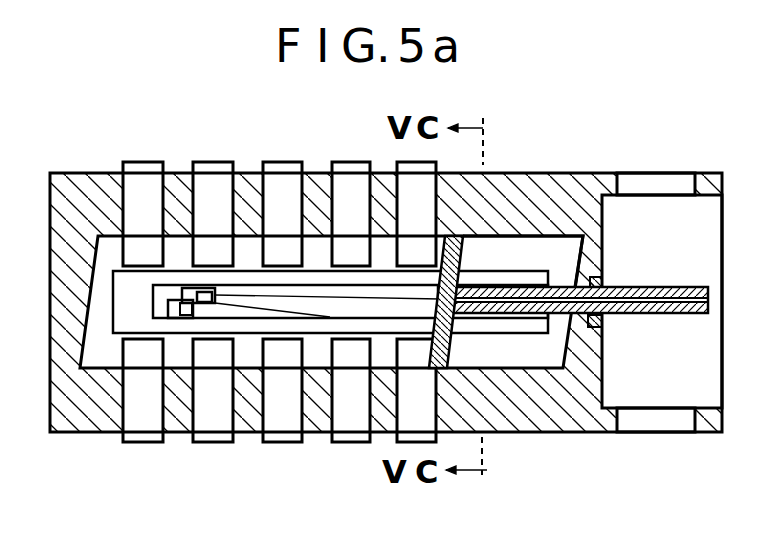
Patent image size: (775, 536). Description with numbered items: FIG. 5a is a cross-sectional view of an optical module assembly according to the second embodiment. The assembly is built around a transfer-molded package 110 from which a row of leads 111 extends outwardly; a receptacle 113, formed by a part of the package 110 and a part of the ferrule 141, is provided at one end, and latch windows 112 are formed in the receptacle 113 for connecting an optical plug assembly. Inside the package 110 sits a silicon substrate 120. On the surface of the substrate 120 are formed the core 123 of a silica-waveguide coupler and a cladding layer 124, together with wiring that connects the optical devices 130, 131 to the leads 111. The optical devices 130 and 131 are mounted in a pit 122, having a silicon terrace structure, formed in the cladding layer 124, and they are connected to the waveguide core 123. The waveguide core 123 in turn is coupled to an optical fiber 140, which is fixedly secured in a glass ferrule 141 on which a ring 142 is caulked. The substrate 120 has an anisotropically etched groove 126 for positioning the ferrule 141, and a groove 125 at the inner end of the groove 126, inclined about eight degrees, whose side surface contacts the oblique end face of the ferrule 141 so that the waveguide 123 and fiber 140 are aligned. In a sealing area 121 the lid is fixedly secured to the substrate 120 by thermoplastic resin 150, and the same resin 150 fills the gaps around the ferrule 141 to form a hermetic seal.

The package 110 is at (247, 183).
The leads 111 is at (205, 162).
The latch windows 112 is at (642, 182).
The receptacle 113 is at (683, 374).
The substrate 120 is at (385, 245).
The sealing area 121 is at (135, 278).
The pit 122 is at (189, 294).
The optical device (core of silica-waveguide coupler) 123 is at (248, 292).
The cladding layer 124 is at (317, 290).
The groove 125 is at (453, 257).
The groove 126 is at (522, 285).
The optical device 130 is at (184, 316).
The optical device 131 is at (207, 302).
The optical fiber 140 is at (683, 293).
The ferrule 141 is at (658, 287).
The ring 142 is at (620, 277).
The thermoplastic resin 150 is at (458, 322).